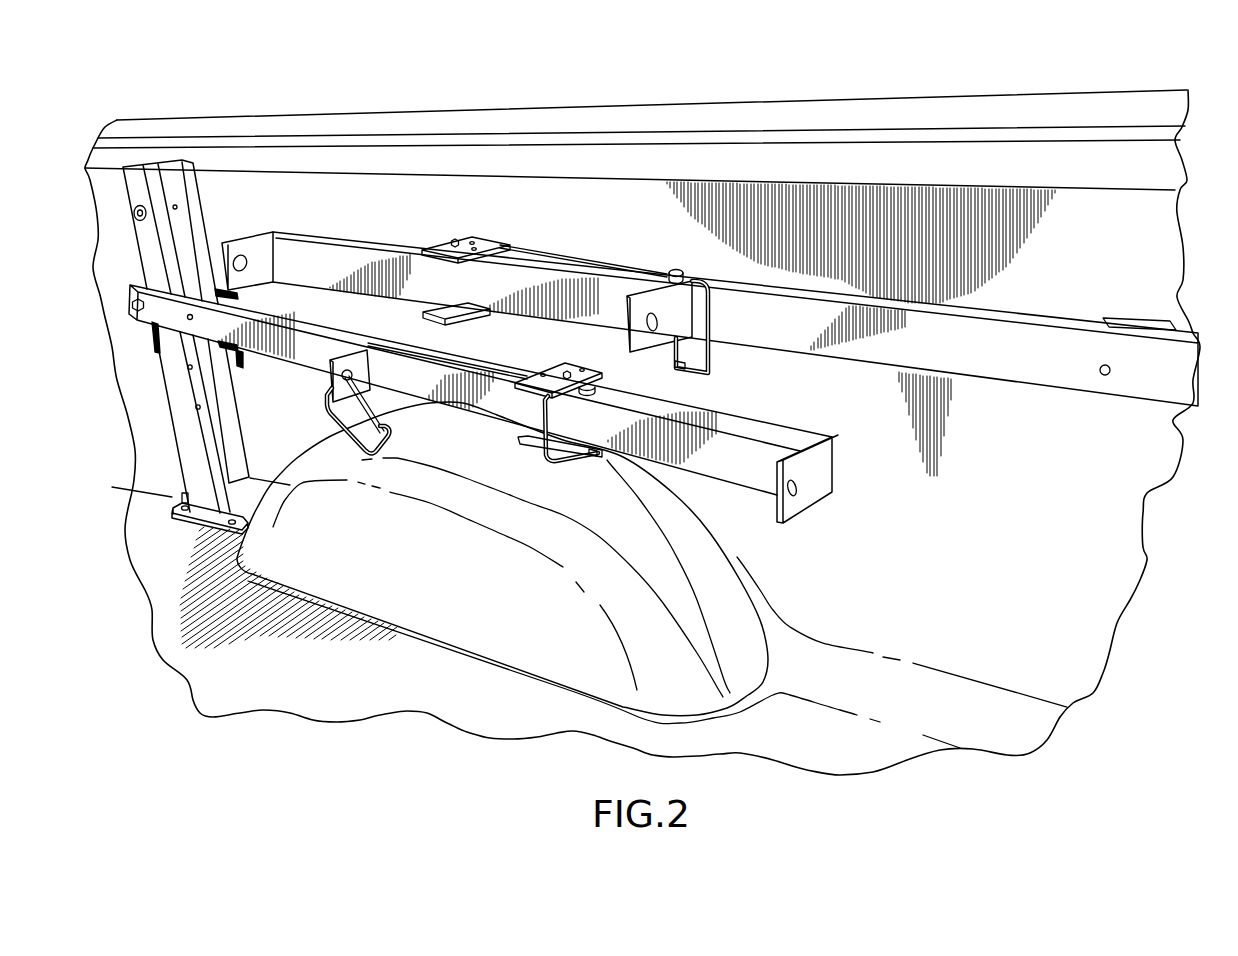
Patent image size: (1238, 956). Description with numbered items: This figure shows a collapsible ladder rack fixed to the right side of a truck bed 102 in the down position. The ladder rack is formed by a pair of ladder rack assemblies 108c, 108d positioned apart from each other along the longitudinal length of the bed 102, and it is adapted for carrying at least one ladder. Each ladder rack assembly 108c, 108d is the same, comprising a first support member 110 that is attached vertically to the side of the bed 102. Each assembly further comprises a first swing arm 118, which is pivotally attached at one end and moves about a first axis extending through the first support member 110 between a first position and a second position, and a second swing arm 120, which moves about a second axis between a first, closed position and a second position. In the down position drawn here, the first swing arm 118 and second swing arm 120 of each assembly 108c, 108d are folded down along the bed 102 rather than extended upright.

The bed 102 is at (486, 120).
The first support member 110 is at (168, 263).
The first swing arm 118 is at (317, 345).
The second swing arm 120 is at (413, 277).
The ladder rack assembly 108c is at (773, 310).
The ladder rack assembly 108d is at (480, 367).